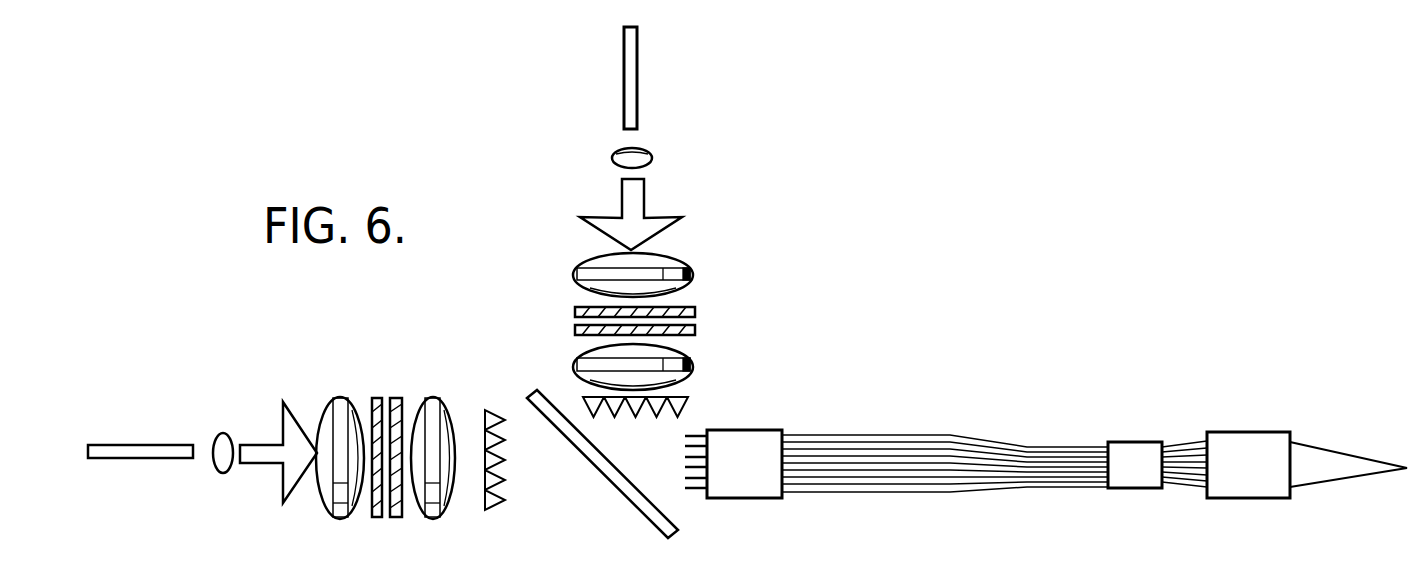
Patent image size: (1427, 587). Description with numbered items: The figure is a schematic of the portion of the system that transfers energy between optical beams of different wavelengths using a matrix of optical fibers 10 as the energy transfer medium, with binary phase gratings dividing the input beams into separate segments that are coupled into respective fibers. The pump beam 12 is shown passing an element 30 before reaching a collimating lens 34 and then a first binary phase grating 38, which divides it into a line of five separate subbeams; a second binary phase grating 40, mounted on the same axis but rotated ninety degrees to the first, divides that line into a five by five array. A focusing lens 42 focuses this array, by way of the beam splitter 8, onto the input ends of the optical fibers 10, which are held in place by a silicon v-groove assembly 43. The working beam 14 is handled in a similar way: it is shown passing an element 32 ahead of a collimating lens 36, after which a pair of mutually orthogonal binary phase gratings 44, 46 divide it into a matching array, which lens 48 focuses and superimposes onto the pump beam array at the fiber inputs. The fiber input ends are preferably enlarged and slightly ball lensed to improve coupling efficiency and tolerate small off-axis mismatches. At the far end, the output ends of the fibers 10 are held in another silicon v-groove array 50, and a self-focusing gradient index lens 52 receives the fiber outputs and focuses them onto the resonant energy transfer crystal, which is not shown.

The beam splitter 8 is at (638, 505).
The optical fibers 10 is at (867, 507).
The pump beam 12 is at (628, 77).
The working beam 14 is at (172, 460).
The collimating lens 30 is at (612, 153).
The collimating lens 32 is at (225, 472).
The collimating lens 34 is at (680, 268).
The collimating lens 36 is at (360, 500).
The first binary phase grating 38 is at (697, 311).
The second binary phase grating 40 is at (578, 329).
The focusing lens 42 is at (578, 358).
The silicon v-groove assembly 43 is at (733, 498).
The binary phase grating 44 is at (373, 398).
The binary phase grating 46 is at (397, 517).
The lens 48 is at (432, 400).
The silicon v-groove array 50 is at (1133, 448).
The self-focusing gradient index lens 52 is at (1225, 435).